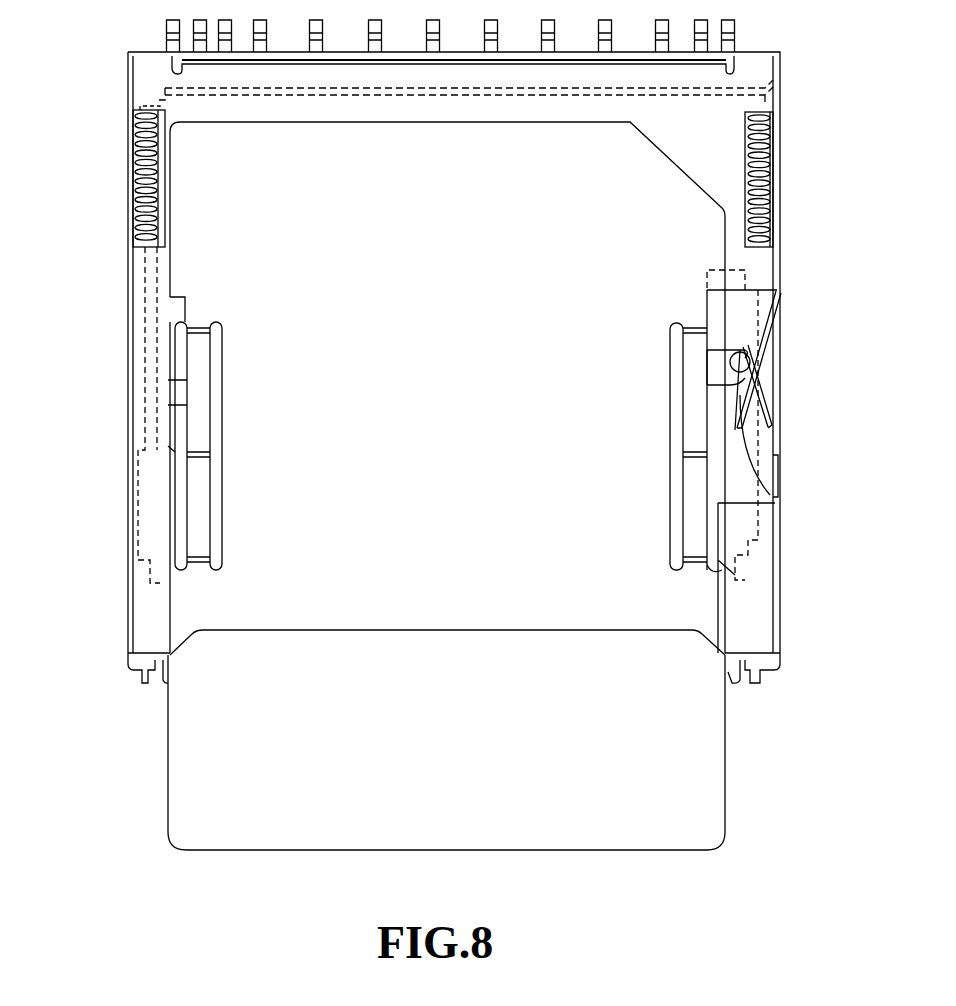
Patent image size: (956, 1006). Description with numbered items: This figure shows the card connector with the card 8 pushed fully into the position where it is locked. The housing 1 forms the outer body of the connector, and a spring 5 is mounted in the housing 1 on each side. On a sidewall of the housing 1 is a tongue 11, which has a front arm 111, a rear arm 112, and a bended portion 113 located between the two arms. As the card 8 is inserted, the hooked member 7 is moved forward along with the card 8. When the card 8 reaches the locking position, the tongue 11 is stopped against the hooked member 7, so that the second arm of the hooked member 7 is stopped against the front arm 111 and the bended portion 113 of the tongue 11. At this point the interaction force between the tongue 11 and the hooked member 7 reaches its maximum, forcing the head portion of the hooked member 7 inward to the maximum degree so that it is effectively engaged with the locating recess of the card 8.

The housing 1 is at (155, 78).
The spring 5 is at (140, 195).
The hooked member 7 is at (772, 497).
The card 8 is at (232, 800).
The tongue 11 is at (765, 375).
The front arm 111 is at (775, 413).
The rear arm 112 is at (763, 338).
The bended portion 113 is at (757, 366).